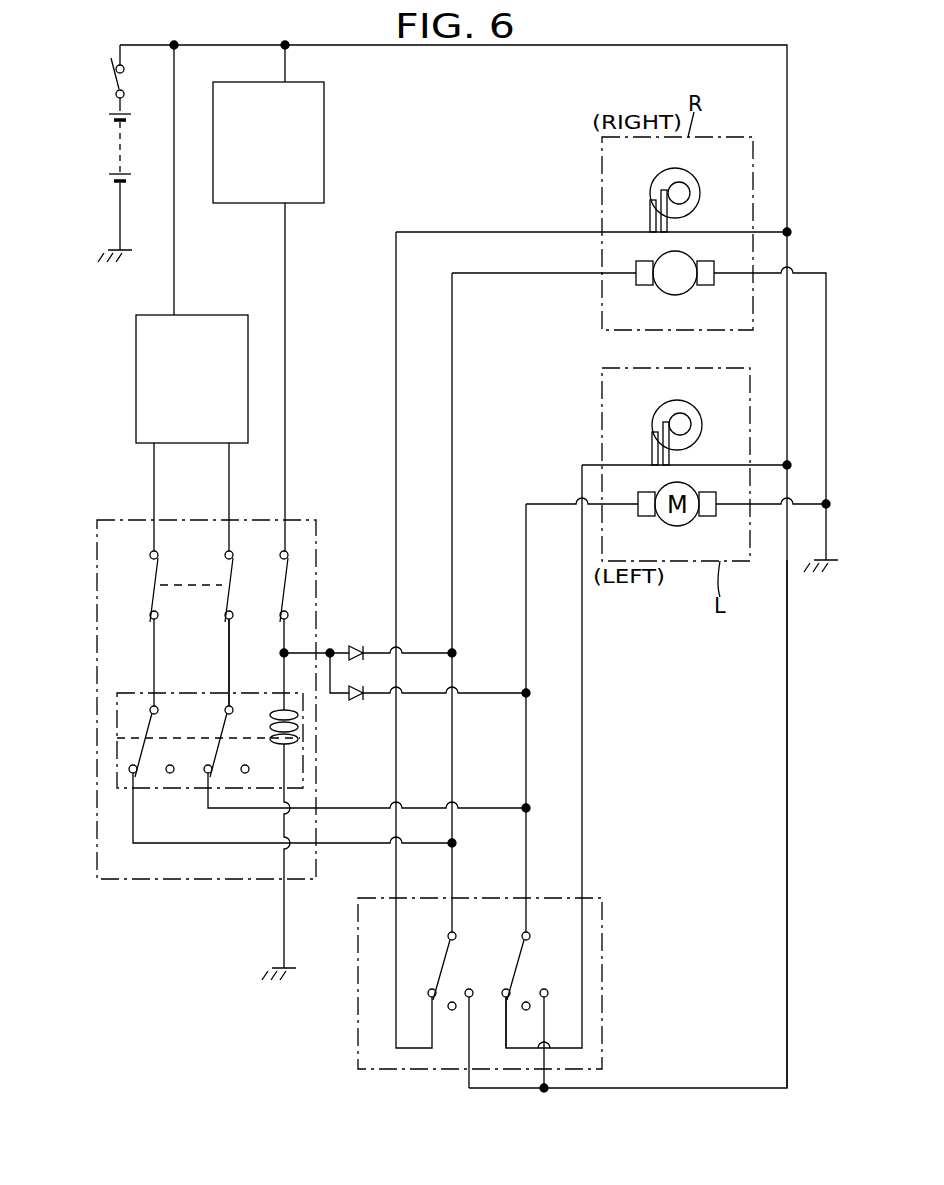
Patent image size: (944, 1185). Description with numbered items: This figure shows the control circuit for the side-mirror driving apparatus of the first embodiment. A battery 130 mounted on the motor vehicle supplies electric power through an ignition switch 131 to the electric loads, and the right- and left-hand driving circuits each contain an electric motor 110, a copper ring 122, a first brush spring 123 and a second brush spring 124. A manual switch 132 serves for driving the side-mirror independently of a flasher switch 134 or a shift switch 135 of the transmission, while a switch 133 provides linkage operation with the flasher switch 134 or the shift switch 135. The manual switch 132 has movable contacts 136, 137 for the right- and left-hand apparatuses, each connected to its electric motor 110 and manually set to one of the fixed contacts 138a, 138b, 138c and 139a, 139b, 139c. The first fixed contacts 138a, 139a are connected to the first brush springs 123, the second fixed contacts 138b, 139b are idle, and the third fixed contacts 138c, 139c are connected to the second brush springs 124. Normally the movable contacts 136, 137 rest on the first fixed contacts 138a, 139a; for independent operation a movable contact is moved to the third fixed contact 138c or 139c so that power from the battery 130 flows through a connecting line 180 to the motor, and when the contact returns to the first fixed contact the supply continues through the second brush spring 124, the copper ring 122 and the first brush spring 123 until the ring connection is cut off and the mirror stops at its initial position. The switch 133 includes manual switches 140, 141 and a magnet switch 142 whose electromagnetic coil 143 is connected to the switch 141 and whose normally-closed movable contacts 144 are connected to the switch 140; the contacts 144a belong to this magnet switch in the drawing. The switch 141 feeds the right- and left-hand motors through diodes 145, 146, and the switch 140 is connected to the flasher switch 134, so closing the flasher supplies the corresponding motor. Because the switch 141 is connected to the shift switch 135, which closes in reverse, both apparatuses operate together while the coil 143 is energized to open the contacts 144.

The electric motor 110 is at (679, 296).
The copper ring 122 is at (698, 186).
The first brush spring 123 is at (650, 218).
The second brush spring 124 is at (670, 228).
The battery 130 is at (108, 148).
The ignition switch 131 is at (114, 84).
The manual switch 132 is at (602, 912).
The switch 133 is at (186, 879).
The flasher switch 134 is at (222, 314).
The shift switch 135 is at (324, 108).
The movable contact 136 is at (442, 966).
The movable contact 137 is at (526, 966).
The first fixed contact 138a is at (428, 993).
The second fixed contact 138b is at (450, 1010).
The third fixed contact 138c is at (469, 989).
The first fixed contact 139a is at (506, 990).
The second fixed contact 139b is at (526, 1010).
The third fixed contact 139c is at (548, 993).
The manual switch 140 is at (146, 596).
The manual switch 141 is at (287, 584).
The magnet switch 142 is at (200, 692).
The electromagnetic coil 143 is at (272, 742).
The normally-closed movable contacts 144 is at (146, 714).
The relay contact 144a is at (206, 773).
The diode 145 is at (352, 644).
The diode 146 is at (350, 702).
The connecting line 180 is at (786, 816).